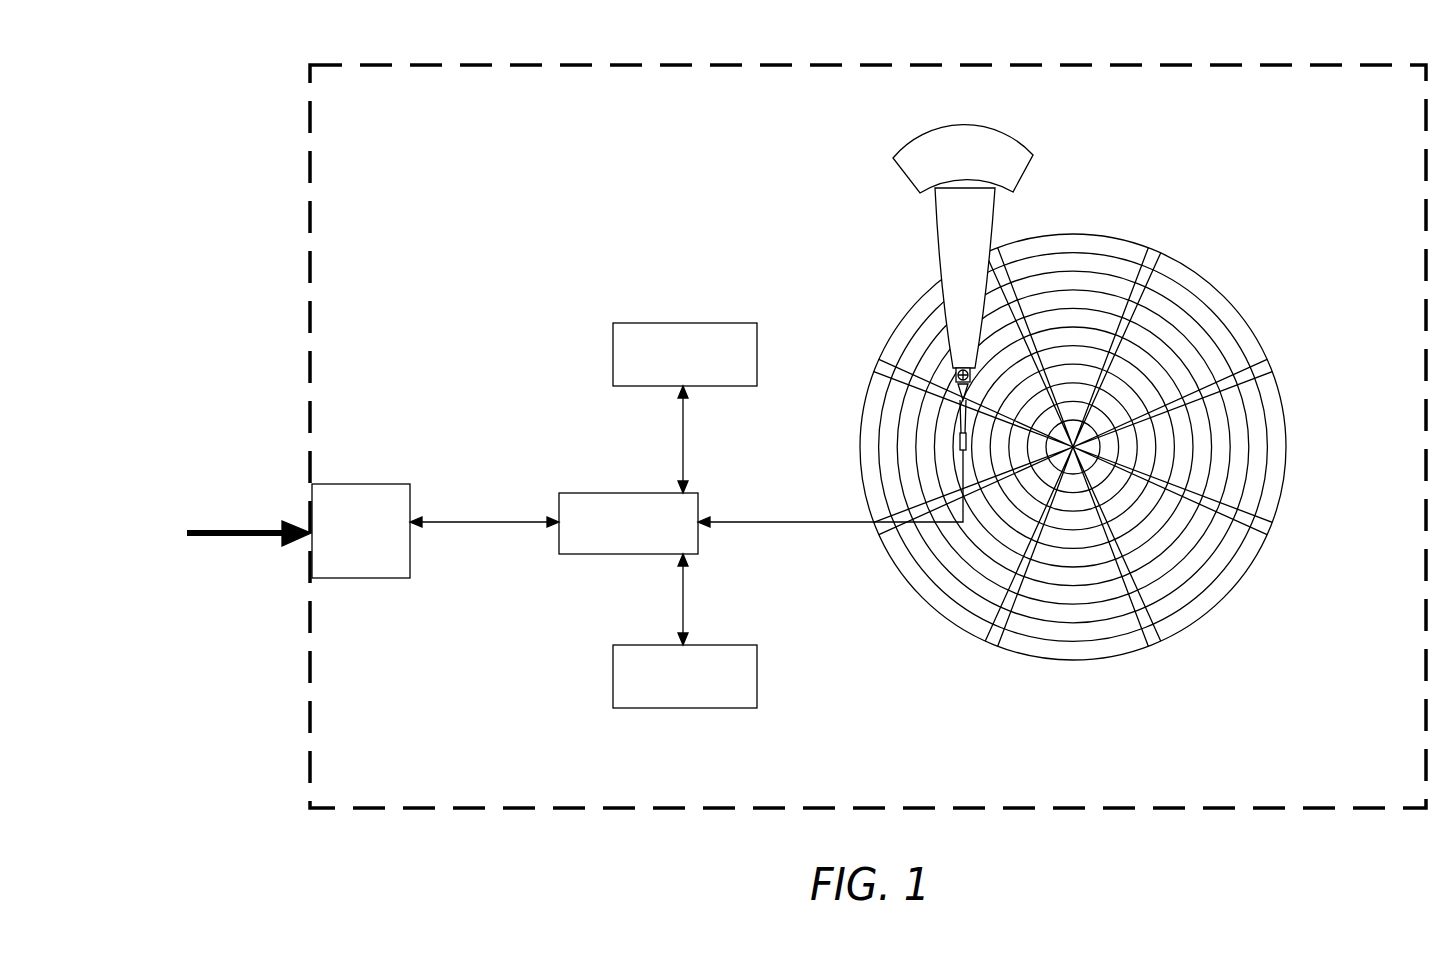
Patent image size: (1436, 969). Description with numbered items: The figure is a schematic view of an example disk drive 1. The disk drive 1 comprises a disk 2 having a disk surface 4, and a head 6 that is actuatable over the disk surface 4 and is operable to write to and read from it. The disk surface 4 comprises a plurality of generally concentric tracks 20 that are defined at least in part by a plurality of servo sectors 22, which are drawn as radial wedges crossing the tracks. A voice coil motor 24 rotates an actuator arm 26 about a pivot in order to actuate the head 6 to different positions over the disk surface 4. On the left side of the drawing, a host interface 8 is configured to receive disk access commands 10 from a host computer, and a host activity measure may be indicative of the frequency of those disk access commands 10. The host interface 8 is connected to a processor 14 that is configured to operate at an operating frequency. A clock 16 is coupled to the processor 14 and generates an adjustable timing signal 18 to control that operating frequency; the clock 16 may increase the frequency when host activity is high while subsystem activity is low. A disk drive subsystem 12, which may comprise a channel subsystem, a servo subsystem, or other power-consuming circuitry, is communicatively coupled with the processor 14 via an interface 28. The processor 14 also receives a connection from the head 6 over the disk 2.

The disk drive 1 is at (536, 812).
The disk 2 is at (1228, 280).
The disk surface 4 is at (1292, 461).
The head 6 is at (952, 456).
The host interface 8 is at (366, 484).
The disk access commands 10 is at (153, 478).
The disk drive subsystem 12 is at (757, 672).
The processor 14 is at (621, 556).
The clock 16 is at (648, 388).
The adjustable timing signal 18 is at (683, 441).
The concentric tracks 20 is at (1075, 262).
The servo sectors 22 is at (1265, 372).
The voice coil motor 24 is at (911, 188).
The actuator arm 26 is at (946, 264).
The interface 28 is at (683, 601).